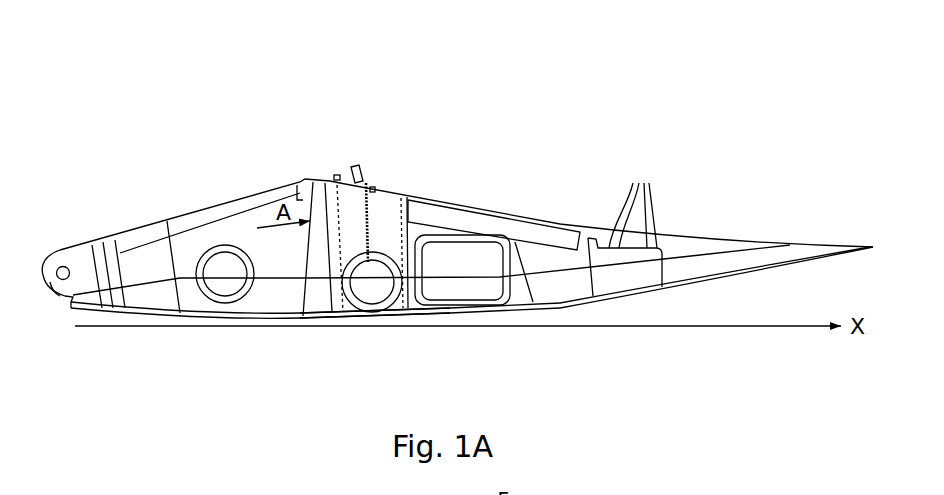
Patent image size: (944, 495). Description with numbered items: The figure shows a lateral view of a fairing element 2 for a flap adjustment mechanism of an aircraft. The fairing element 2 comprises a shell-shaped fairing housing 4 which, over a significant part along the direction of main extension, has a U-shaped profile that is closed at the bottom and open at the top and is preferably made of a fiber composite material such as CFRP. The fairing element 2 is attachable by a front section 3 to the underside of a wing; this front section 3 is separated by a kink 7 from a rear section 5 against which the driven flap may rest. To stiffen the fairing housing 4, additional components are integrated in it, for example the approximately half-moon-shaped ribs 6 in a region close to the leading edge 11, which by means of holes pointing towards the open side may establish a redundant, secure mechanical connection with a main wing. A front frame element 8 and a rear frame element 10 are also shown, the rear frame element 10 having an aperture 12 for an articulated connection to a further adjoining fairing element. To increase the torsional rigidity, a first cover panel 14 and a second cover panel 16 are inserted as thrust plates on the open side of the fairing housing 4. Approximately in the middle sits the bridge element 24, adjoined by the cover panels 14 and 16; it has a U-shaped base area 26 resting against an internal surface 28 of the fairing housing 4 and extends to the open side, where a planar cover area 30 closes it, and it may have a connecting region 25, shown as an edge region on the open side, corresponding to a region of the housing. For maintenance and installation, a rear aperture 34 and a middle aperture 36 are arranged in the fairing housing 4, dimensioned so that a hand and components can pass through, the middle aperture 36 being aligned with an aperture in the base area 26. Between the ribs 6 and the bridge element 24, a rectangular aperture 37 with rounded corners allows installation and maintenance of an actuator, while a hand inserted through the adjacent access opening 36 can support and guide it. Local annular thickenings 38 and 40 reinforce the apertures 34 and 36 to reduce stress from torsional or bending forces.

The fairing element 2 is at (452, 108).
The front section 3 is at (387, 108).
The fairing housing 4 is at (680, 237).
The rear section 5 is at (103, 176).
The ribs 6 is at (625, 227).
The kink 7 is at (317, 168).
The front frame element 8 is at (527, 252).
The rear frame element 10 is at (107, 237).
The leading edge 11 is at (869, 206).
The aperture 12 is at (66, 263).
The first cover panel 14 is at (470, 220).
The second cover panel 16 is at (238, 210).
The bridge element 24 is at (387, 200).
The connecting region 25 is at (413, 192).
The U-shaped base area 26 is at (336, 324).
The internal surface 28 is at (311, 305).
The planar cover area 30 is at (414, 186).
The rear aperture 34 is at (225, 280).
The middle aperture 36 is at (377, 293).
The aperture 37 is at (472, 293).
The annular thickening 38 is at (213, 245).
The annular thickening 40 is at (372, 186).